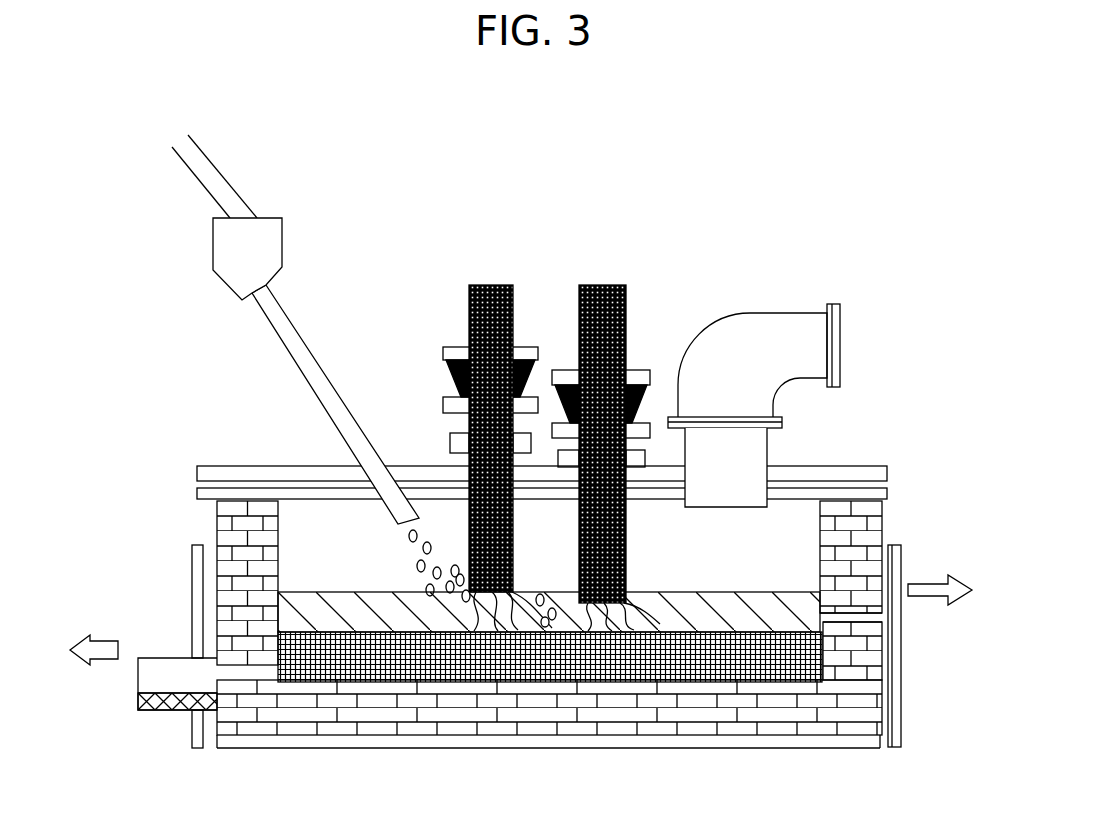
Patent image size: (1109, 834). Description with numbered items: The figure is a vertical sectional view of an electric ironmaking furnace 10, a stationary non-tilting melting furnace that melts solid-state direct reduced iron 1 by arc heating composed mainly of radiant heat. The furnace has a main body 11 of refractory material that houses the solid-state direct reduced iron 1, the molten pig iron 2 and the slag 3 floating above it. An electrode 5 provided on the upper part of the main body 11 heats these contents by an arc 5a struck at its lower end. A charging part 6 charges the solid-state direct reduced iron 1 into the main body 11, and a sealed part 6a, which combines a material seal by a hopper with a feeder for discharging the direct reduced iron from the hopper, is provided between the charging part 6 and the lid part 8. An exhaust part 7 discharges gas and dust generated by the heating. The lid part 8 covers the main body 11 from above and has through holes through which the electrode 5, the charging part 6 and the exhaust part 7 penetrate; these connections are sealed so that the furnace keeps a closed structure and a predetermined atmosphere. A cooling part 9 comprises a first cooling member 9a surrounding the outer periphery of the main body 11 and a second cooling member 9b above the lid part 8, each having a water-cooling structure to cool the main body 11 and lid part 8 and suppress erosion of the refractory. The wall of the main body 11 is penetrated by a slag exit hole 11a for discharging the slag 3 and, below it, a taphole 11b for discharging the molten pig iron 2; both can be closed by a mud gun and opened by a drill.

The solid-state direct reduced iron 1 is at (409, 533).
The molten pig iron 2 is at (333, 665).
The slag 3 is at (310, 590).
The electrode 5 is at (627, 302).
The arc 5a is at (625, 606).
The charging part 6 is at (205, 186).
The sealed part 6a is at (225, 250).
The exhaust part 7 is at (790, 318).
The lid part 8 is at (881, 494).
The cooling part 9 is at (539, 597).
The first cooling member 9a is at (195, 738).
The second cooling member 9b is at (856, 468).
The electric ironmaking furnace 10 is at (861, 236).
The main body 11 is at (217, 525).
The slag exit hole 11a is at (873, 617).
The taphole 11b is at (217, 670).